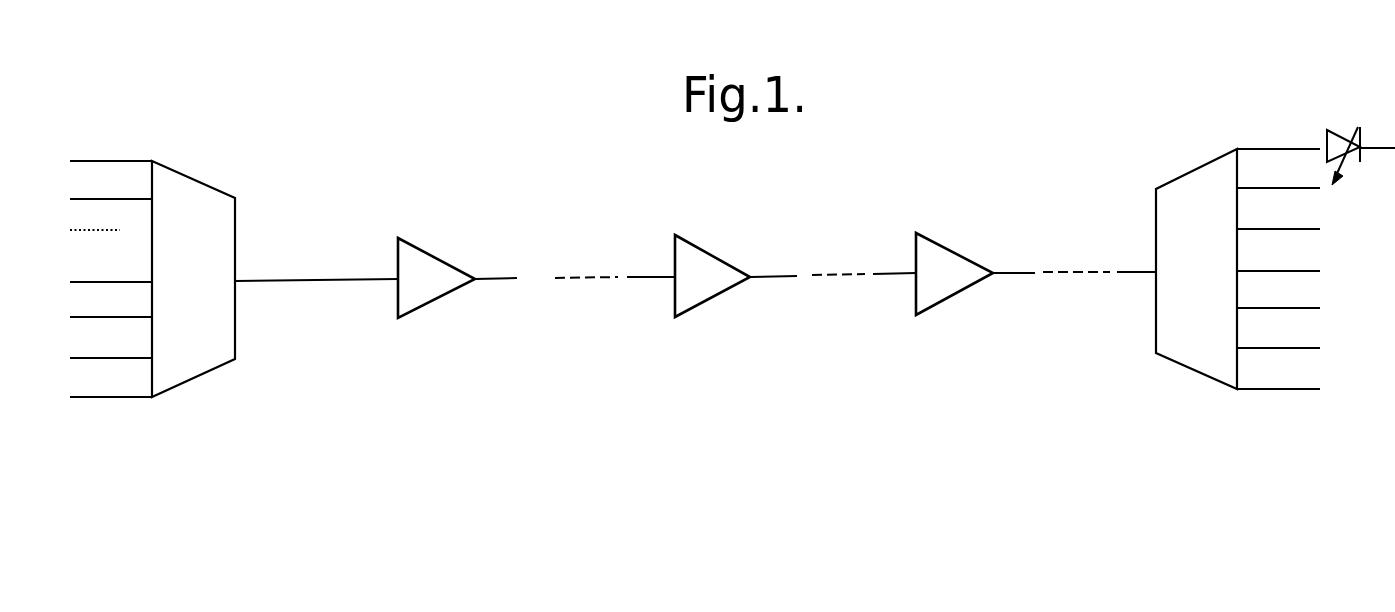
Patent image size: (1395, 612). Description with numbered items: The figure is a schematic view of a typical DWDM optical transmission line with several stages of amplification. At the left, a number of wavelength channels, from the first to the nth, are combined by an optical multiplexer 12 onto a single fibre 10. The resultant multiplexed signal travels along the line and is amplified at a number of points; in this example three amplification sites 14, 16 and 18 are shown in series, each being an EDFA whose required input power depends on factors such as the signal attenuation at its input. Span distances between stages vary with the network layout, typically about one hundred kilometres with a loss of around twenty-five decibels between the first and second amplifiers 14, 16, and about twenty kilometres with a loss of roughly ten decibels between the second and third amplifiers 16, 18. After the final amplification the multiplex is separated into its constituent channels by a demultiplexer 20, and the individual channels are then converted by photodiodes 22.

The single fibre 10 is at (373, 279).
The optical multiplexer 12 is at (193, 179).
The amplification site 14 is at (438, 298).
The amplification site 16 is at (718, 295).
The amplification site 18 is at (970, 286).
The demultiplexer 20 is at (1190, 368).
The photodiodes 22 is at (1345, 132).